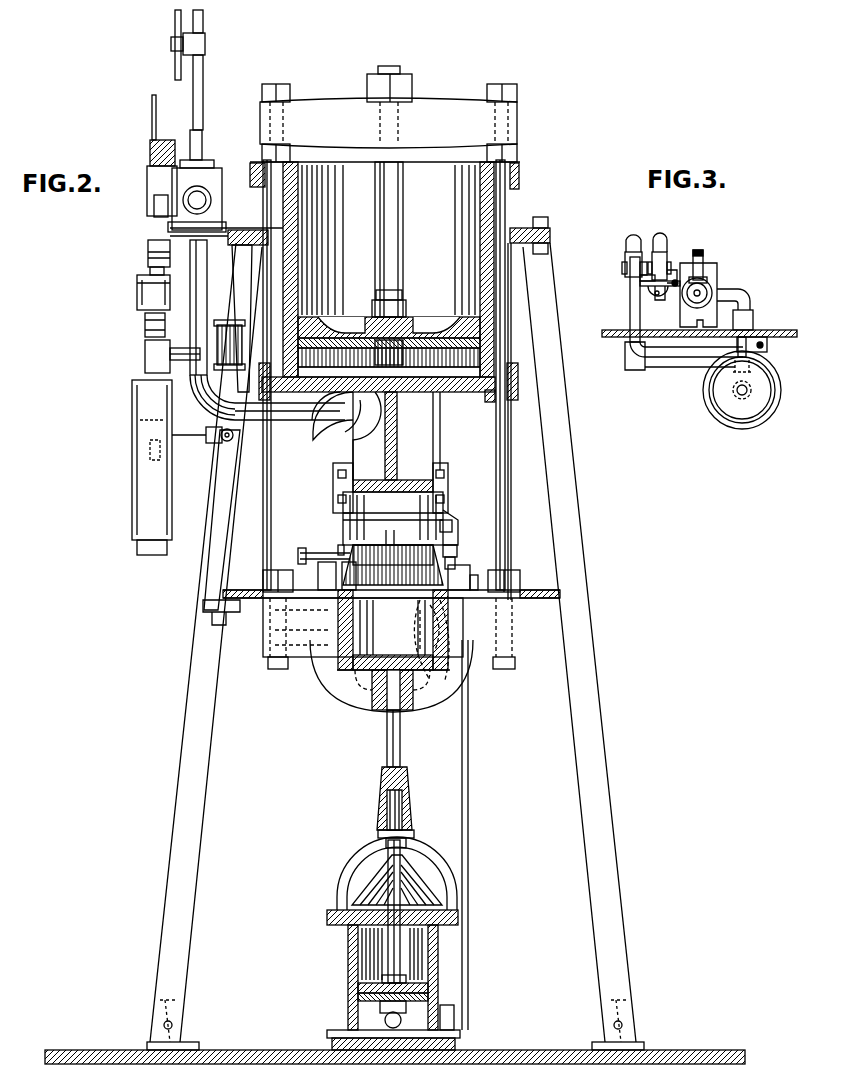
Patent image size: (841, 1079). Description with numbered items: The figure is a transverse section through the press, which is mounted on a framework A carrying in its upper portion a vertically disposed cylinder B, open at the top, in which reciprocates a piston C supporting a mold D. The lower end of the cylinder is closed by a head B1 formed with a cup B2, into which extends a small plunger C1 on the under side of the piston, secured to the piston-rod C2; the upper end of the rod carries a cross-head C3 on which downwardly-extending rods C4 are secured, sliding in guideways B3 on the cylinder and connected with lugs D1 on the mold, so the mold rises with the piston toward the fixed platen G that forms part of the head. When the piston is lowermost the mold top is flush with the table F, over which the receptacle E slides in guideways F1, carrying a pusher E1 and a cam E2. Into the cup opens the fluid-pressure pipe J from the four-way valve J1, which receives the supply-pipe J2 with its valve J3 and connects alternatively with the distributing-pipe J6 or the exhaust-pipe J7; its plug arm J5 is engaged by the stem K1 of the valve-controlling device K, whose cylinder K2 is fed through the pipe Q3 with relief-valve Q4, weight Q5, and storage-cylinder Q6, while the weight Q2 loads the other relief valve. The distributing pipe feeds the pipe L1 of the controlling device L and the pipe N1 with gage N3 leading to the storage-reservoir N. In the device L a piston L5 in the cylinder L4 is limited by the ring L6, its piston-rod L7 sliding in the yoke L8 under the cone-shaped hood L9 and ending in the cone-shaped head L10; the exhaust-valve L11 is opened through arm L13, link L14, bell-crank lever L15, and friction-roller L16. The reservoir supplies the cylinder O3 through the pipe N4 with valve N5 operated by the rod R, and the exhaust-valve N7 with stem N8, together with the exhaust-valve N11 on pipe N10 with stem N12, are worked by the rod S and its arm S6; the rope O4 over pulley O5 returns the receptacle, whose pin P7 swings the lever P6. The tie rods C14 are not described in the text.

In FIG. 2, the framework A is at (186, 742).
In FIG. 2, the cylinder B is at (385, 282).
In FIG. 2, the head B1 is at (443, 410).
In FIG. 2, the cup B2 is at (374, 436).
In FIG. 2, the guideways B3 is at (256, 170).
In FIG. 2, the piston C is at (422, 333).
In FIG. 2, the small plunger C1 is at (405, 305).
In FIG. 2, the piston-rod C2 is at (404, 203).
In FIG. 2, the cross-head C3 is at (446, 115).
In FIG. 2, the downwardly-extending rods C4 is at (277, 287).
In FIG. 2, the tie rods C14 is at (503, 308).
In FIG. 2, the mold D is at (350, 660).
In FIG. 2, the lugs D1 is at (517, 612).
In FIG. 2, the receptacle E is at (350, 520).
In FIG. 2, the pusher E1 is at (383, 540).
In FIG. 2, the cam E2 is at (452, 530).
In FIG. 2, the table F is at (223, 592).
In FIG. 3, the table F is at (610, 331).
In FIG. 2, the guideways F1 is at (333, 590).
In FIG. 2, the platen G is at (355, 470).
In FIG. 2, the fluid-pressure pipe J is at (325, 425).
In FIG. 2, the four-way valve J1 is at (200, 160).
In FIG. 2, the supply-pipe J2 is at (204, 77).
In FIG. 2, the valve J3 is at (206, 44).
In FIG. 2, the arm J5 is at (152, 205).
In FIG. 2, the distributing-pipe J6 is at (207, 283).
In FIG. 2, the exhaust-pipe J7 is at (224, 197).
In FIG. 2, the valve-controlling device K is at (372, 678).
In FIG. 2, the stem K1 is at (400, 748).
In FIG. 2, the cylinder K2 is at (409, 806).
In FIG. 2, the controlling device L is at (370, 986).
In FIG. 2, the pipe L1 is at (234, 436).
In FIG. 2, the cylinder L4 is at (348, 950).
In FIG. 2, the piston L5 is at (430, 988).
In FIG. 2, the ring L6 is at (352, 912).
In FIG. 2, the piston-rod L7 is at (400, 940).
In FIG. 2, the yoke L8 is at (420, 850).
In FIG. 2, the cone-shaped hood L9 is at (362, 870).
In FIG. 2, the cone-shaped head L10 is at (378, 832).
In FIG. 2, the exhaust-valve L11 is at (370, 1018).
In FIG. 2, the arm L13 is at (455, 1015).
In FIG. 2, the link L14 is at (469, 768).
In FIG. 2, the bell-crank lever L15 is at (458, 550).
In FIG. 2, the friction-roller L16 is at (462, 568).
In FIG. 2, the storage-reservoir N is at (445, 678).
In FIG. 3, the storage-reservoir N is at (746, 428).
In FIG. 2, the pipe N1 is at (222, 503).
In FIG. 2, the gage N3 is at (229, 339).
In FIG. 3, the pipe N4 is at (750, 300).
In FIG. 3, the valve N5 is at (754, 318).
In FIG. 3, the exhaust-valve N7 is at (661, 250).
In FIG. 3, the stem N8 is at (675, 268).
In FIG. 3, the pipe N10 is at (668, 367).
In FIG. 3, the exhaust-valve N11 is at (625, 264).
In FIG. 3, the stem N12 is at (643, 278).
In FIG. 3, the cylinder O3 is at (718, 280).
In FIG. 3, the rope O4 is at (700, 250).
In FIG. 3, the pulley O5 is at (706, 262).
In FIG. 2, the lever P6 is at (300, 551).
In FIG. 2, the pin P7 is at (338, 550).
In FIG. 2, the weight Q2 is at (148, 252).
In FIG. 2, the pipe Q3 is at (145, 355).
In FIG. 2, the relief-valve Q4 is at (145, 325).
In FIG. 2, the weight Q5 is at (137, 292).
In FIG. 2, the storage-cylinder Q6 is at (132, 491).
In FIG. 3, the rod R is at (768, 346).
In FIG. 3, the rod S is at (670, 300).
In FIG. 3, the arm S6 is at (656, 298).